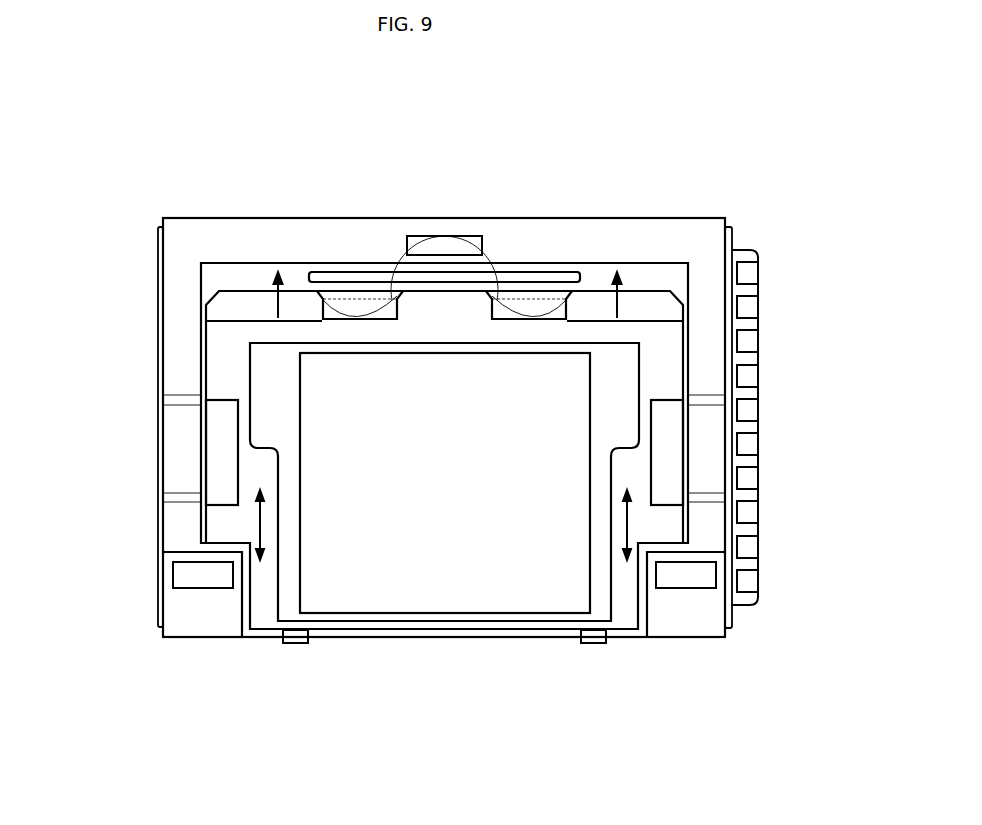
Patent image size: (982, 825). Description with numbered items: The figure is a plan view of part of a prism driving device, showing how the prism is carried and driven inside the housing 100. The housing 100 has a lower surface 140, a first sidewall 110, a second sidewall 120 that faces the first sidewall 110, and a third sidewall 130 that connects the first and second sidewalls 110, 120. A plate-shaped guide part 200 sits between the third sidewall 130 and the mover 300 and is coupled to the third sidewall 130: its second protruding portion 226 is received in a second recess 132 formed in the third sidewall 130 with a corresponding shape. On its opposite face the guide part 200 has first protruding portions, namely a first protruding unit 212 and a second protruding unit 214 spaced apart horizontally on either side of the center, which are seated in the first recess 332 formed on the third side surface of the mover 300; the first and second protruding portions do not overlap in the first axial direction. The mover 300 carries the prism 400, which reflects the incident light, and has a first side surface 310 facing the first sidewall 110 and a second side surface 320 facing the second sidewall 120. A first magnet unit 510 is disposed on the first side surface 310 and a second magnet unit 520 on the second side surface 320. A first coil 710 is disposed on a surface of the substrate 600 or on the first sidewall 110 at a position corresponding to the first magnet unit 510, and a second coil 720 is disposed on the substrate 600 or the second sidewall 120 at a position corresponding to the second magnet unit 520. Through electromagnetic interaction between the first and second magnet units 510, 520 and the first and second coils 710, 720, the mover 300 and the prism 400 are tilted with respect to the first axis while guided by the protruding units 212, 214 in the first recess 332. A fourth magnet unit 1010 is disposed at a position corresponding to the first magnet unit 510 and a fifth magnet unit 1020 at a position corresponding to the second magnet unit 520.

The housing 100 is at (725, 218).
The first sidewall 110 is at (705, 287).
The second sidewall 120 is at (183, 282).
The third sidewall 130 is at (230, 238).
The second recess 132 is at (472, 236).
The lower surface 140 is at (660, 270).
The guide part 200 is at (352, 273).
The first protruding unit 212 is at (352, 314).
The second protruding unit 214 is at (570, 310).
The second protruding portion 226 is at (445, 250).
The mover 300 is at (622, 625).
The first side surface 310 is at (637, 480).
The second side surface 320 is at (260, 477).
The first recess 332 is at (500, 318).
The prism 400 is at (408, 598).
The first magnet unit 510 is at (668, 453).
The second magnet unit 520 is at (215, 433).
The substrate 600 is at (753, 393).
The first coil 710 is at (712, 493).
The second coil 720 is at (182, 493).
The fourth magnet unit 1010 is at (680, 578).
The fifth magnet unit 1020 is at (205, 575).